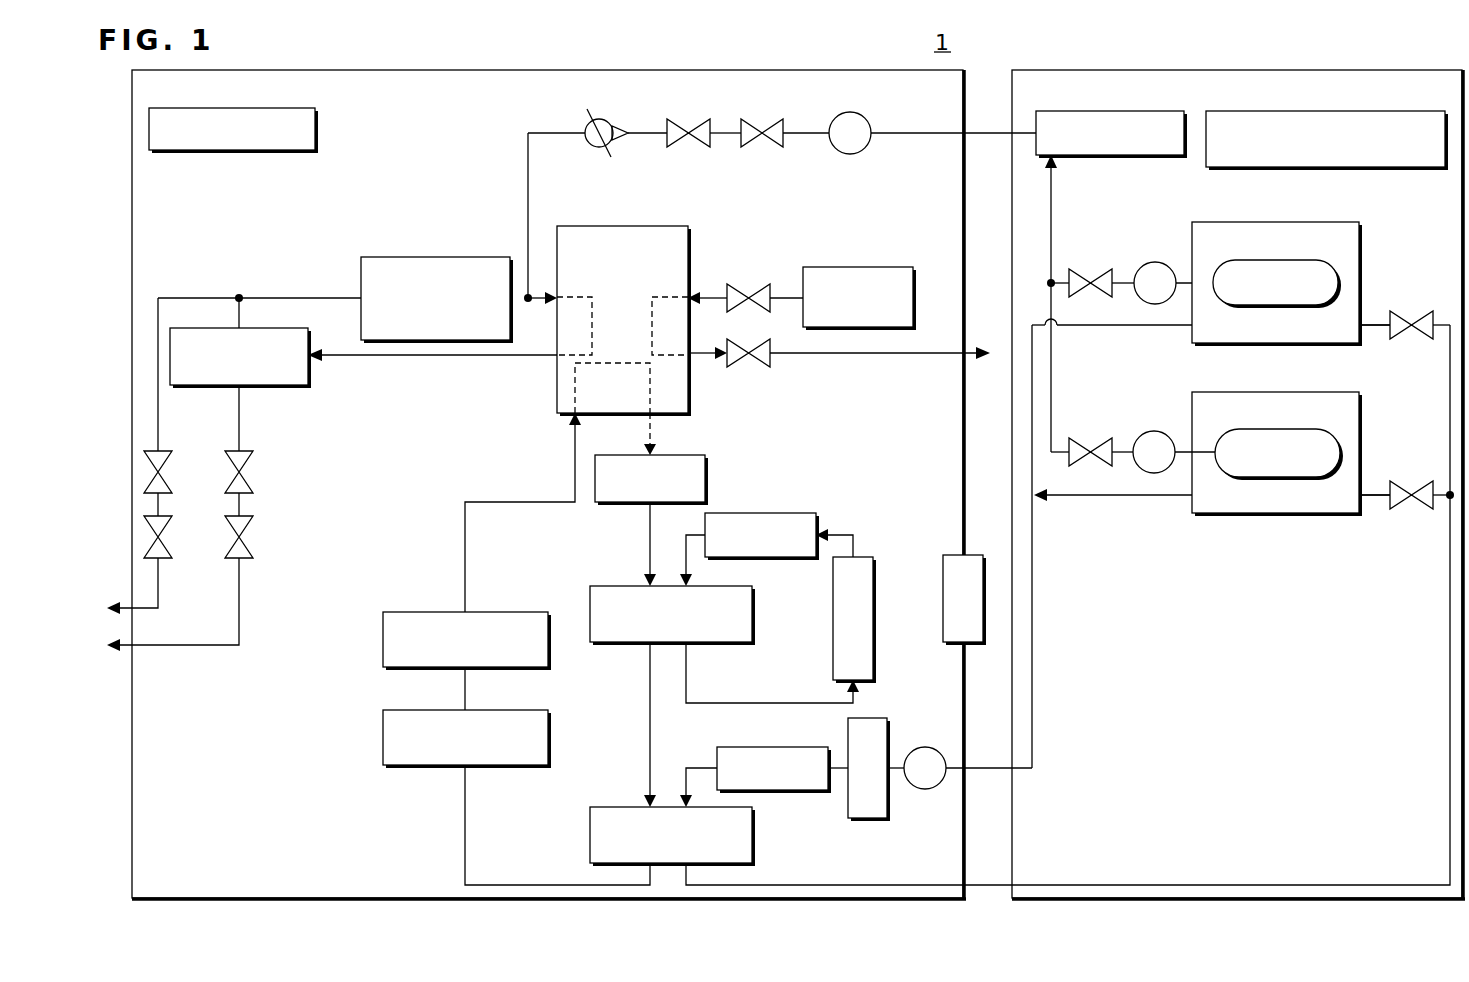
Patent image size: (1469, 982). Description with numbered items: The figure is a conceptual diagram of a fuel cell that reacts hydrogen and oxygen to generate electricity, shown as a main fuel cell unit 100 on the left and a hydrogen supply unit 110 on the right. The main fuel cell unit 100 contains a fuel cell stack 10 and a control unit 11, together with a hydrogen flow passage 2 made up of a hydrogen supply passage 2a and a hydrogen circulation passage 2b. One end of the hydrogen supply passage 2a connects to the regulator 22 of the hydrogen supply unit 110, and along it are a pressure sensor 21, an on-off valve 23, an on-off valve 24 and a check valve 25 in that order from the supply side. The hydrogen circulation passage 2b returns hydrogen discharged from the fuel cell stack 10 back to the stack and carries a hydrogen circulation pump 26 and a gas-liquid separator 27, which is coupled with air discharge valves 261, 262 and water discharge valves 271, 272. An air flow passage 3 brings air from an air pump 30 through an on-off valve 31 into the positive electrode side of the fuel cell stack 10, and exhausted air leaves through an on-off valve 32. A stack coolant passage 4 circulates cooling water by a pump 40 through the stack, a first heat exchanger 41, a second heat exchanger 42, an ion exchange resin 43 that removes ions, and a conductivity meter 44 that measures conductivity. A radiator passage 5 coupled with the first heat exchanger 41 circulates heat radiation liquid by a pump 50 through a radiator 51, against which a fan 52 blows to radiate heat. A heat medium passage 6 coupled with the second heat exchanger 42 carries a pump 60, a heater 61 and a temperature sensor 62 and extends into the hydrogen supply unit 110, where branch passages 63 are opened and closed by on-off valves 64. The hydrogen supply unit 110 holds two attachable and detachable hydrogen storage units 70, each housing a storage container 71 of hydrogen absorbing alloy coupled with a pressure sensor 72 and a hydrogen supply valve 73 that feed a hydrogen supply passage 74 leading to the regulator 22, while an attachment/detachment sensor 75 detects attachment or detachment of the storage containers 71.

The main fuel cell unit 100 is at (318, 71).
The hydrogen supply unit 110 is at (1075, 71).
The control unit 11 is at (316, 130).
The hydrogen flow passage 2 is at (390, 193).
The hydrogen supply passage 2a is at (528, 236).
The hydrogen circulation passage 2b is at (340, 355).
The hydrogen circulation pump 26 is at (392, 257).
The gas-liquid separator 27 is at (268, 385).
The air discharge valve 261 is at (165, 479).
The air discharge valve 262 is at (165, 544).
The water discharge valve 271 is at (246, 479).
The water discharge valve 272 is at (246, 544).
The check valve 25 is at (604, 147).
The on-off valve 24 is at (688, 147).
The on-off valve 23 is at (762, 147).
The pressure sensor 21 is at (852, 154).
The fuel cell stack 10 is at (637, 226).
The air pump 30 is at (860, 267).
The air flow passage 3 is at (783, 298).
The on-off valve 31 is at (748, 284).
The on-off valve 32 is at (748, 367).
The pump 40 is at (690, 455).
The first heat exchanger 41 is at (606, 584).
The second heat exchanger 42 is at (612, 806).
The ion exchange resin 43 is at (500, 710).
The conductivity meter 44 is at (500, 612).
The stack coolant passage 4 is at (510, 885).
The radiator passage 5 is at (745, 703).
The pump 50 is at (775, 513).
The radiator 51 is at (880, 557).
The fan 52 is at (950, 555).
The heat medium passage 6 is at (1032, 604).
The pump 60 is at (776, 790).
The heater 61 is at (868, 818).
The temperature sensor 62 is at (924, 789).
The regulator 22 is at (1125, 155).
The hydrogen supply passage 74 is at (1051, 220).
The attachment/detachment sensor 75 is at (1310, 111).
The hydrogen storage unit 70 is at (1300, 222).
The storage container 71 is at (1276, 260).
The pressure sensor 72 is at (1156, 262).
The hydrogen supply valve 73 is at (1091, 270).
The branch passage 63 is at (1372, 325).
The on-off valve 64 is at (1412, 311).